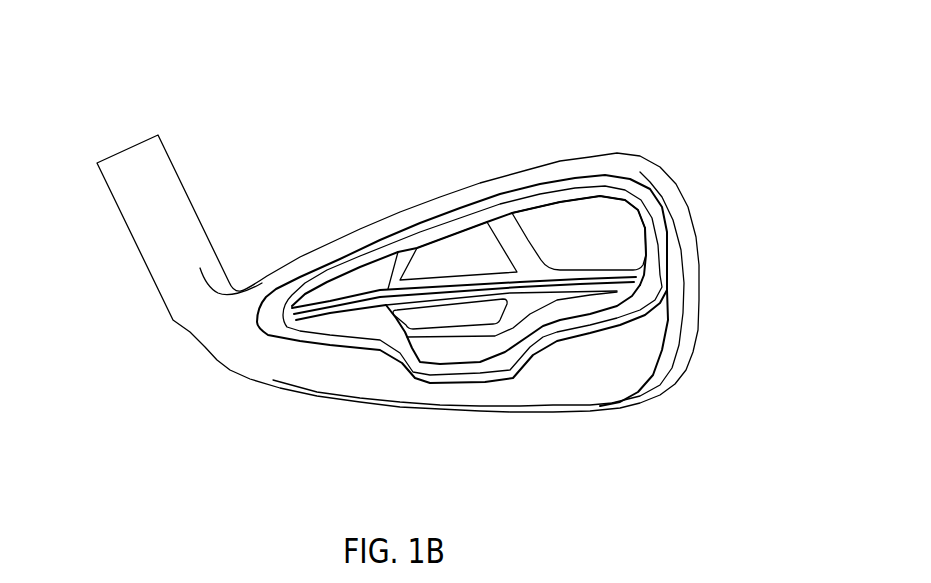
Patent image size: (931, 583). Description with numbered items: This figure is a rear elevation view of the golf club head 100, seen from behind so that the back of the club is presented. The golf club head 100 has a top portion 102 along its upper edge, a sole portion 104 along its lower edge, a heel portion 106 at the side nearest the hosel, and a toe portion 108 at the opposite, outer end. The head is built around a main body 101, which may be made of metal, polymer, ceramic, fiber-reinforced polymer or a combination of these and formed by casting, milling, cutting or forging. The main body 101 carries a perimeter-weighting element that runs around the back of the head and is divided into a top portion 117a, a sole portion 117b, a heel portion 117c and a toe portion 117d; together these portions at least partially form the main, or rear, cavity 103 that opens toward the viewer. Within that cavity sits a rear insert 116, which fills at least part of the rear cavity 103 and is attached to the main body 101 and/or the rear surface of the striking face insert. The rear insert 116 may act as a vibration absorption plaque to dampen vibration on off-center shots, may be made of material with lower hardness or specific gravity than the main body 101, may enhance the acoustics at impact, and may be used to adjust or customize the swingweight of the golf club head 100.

The golf club head 100 is at (300, 93).
The main body 101 is at (645, 112).
The top portion 102 is at (517, 160).
The rear cavity 103 is at (590, 222).
The sole portion 104 is at (422, 422).
The heel portion 106 is at (217, 378).
The toe portion 108 is at (700, 335).
The rear insert 116 is at (453, 347).
The top portion of perimeter-weighting element 117a is at (463, 212).
The sole portion of perimeter-weighting element 117b is at (453, 395).
The heel portion of perimeter-weighting element 117c is at (233, 364).
The toe portion of perimeter-weighting element 117d is at (657, 267).